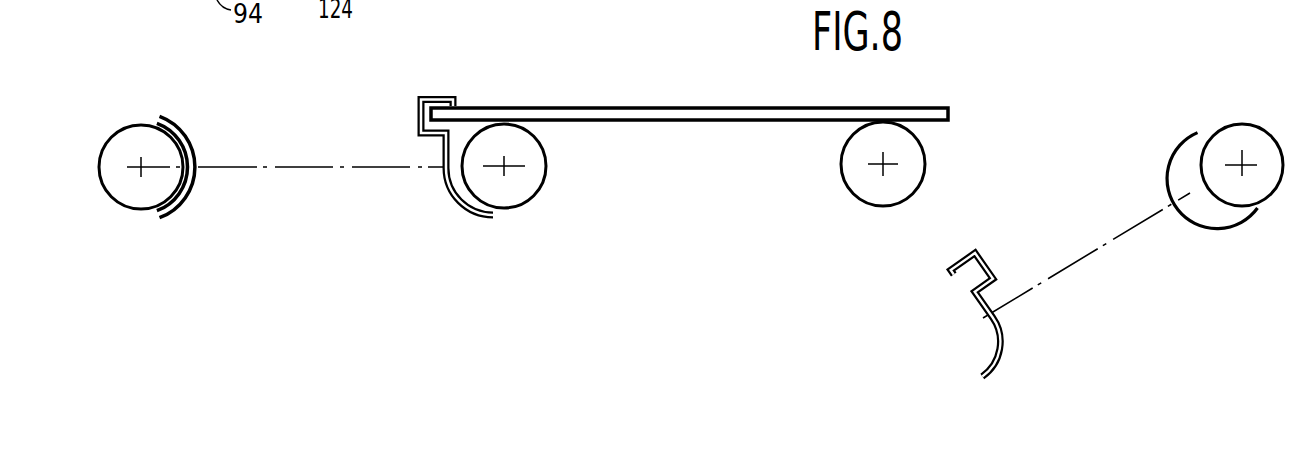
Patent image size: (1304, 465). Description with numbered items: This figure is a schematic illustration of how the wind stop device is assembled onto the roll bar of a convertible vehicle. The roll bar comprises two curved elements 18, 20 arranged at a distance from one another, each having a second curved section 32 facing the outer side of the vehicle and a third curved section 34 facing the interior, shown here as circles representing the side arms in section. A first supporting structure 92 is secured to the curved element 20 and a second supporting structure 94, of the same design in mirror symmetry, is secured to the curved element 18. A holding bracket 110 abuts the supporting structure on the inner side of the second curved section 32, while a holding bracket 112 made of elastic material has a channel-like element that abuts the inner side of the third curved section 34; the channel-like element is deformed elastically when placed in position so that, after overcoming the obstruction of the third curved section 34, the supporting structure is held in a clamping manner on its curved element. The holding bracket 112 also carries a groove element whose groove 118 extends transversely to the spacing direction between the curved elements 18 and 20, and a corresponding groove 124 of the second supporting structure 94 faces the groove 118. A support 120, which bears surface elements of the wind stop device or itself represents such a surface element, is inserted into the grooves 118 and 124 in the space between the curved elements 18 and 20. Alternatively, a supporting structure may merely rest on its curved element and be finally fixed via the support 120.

The curved element 18 is at (1202, 268).
The curved element 20 is at (144, 230).
The second curved section 32 is at (117, 172).
The third curved section 34 is at (528, 188).
The first supporting structure 92 is at (197, 214).
The second supporting structure 94 is at (1000, 337).
The holding bracket 110 is at (1243, 213).
The holding bracket 112 is at (966, 358).
The groove 118 is at (428, 97).
The support 120 is at (632, 110).
The groove 124 is at (977, 253).